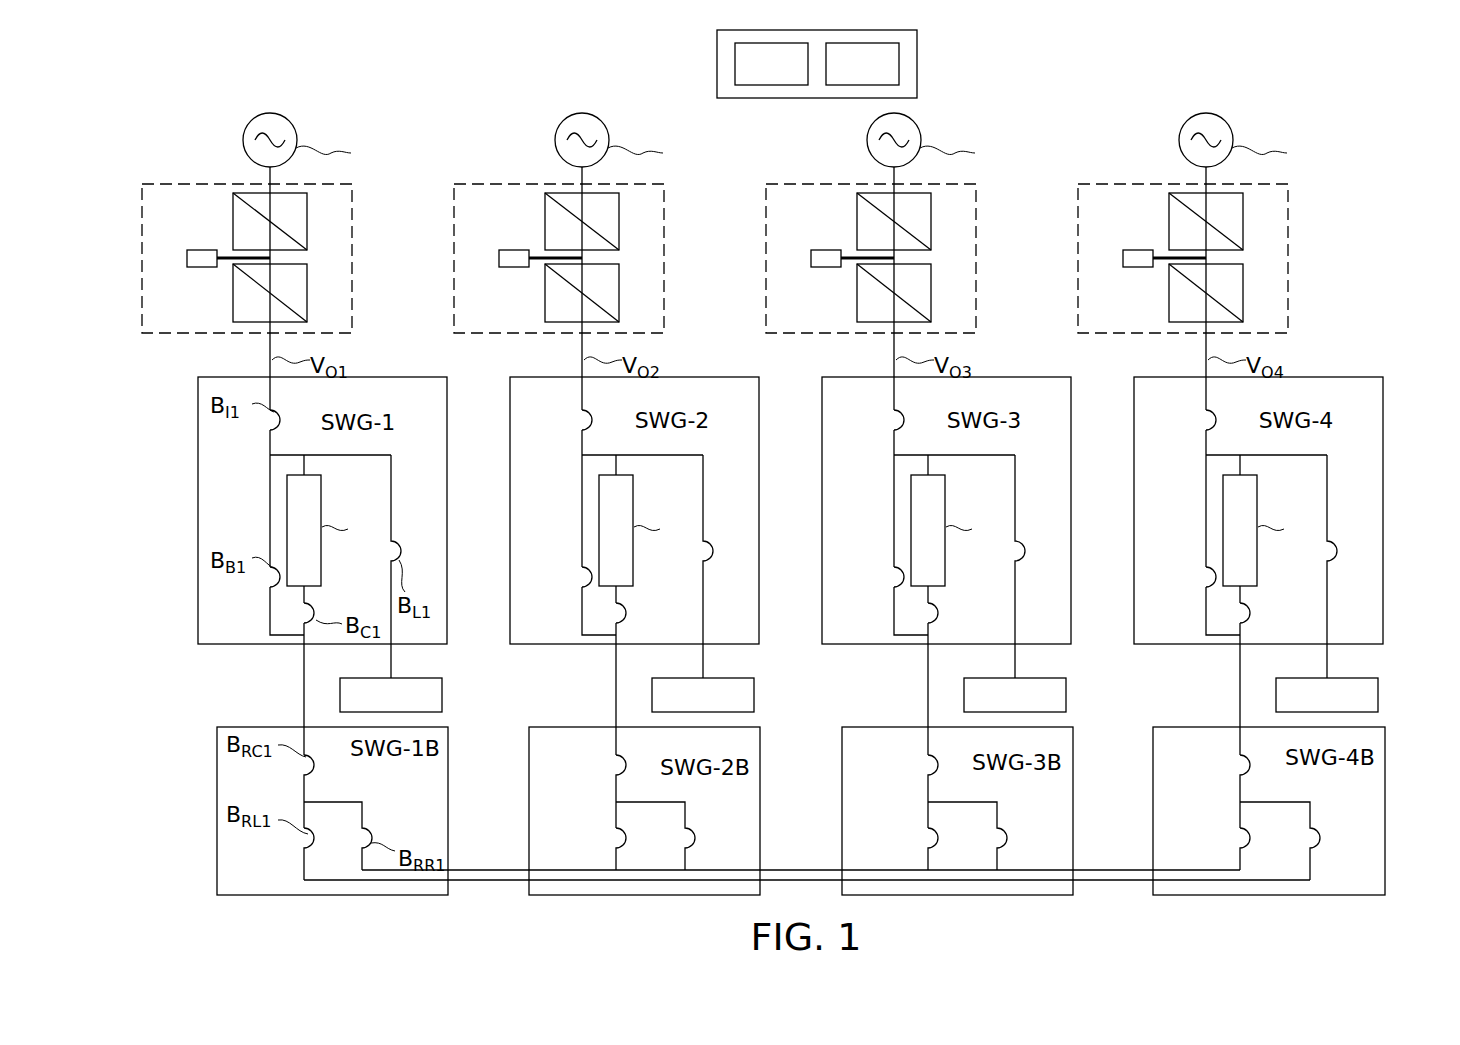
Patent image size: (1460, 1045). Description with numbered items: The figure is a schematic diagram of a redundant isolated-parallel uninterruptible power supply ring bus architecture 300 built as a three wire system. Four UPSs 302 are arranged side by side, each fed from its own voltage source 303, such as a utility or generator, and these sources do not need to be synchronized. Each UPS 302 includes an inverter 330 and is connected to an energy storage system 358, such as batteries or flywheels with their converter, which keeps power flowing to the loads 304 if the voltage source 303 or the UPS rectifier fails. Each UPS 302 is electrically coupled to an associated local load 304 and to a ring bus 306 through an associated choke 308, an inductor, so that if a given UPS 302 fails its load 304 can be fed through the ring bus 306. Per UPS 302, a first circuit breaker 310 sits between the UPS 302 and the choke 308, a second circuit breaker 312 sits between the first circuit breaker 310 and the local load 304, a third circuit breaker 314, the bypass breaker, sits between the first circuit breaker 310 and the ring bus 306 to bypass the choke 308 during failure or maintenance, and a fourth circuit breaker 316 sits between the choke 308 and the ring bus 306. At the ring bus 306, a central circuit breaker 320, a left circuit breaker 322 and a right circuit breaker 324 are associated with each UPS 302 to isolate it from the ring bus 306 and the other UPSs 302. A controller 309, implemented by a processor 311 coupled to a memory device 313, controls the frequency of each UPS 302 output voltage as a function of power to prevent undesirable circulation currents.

The ring bus architecture 300 is at (1327, 83).
The UPS 302 is at (190, 184).
The voltage source 303 is at (292, 128).
The load 304 is at (442, 690).
The ring bus 306 is at (304, 880).
The choke 308 is at (321, 498).
The controller 309 is at (868, 64).
The first circuit breaker 310 is at (273, 432).
The processor 311 is at (771, 64).
The second circuit breaker 312 is at (400, 545).
The memory device 313 is at (862, 64).
The third circuit breaker 314 is at (273, 588).
The fourth circuit breaker 316 is at (315, 608).
The central circuit breaker 320 is at (308, 772).
The left circuit breaker 322 is at (304, 842).
The right circuit breaker 324 is at (368, 831).
The inverter 330 is at (233, 305).
The energy storage system 358 is at (187, 258).